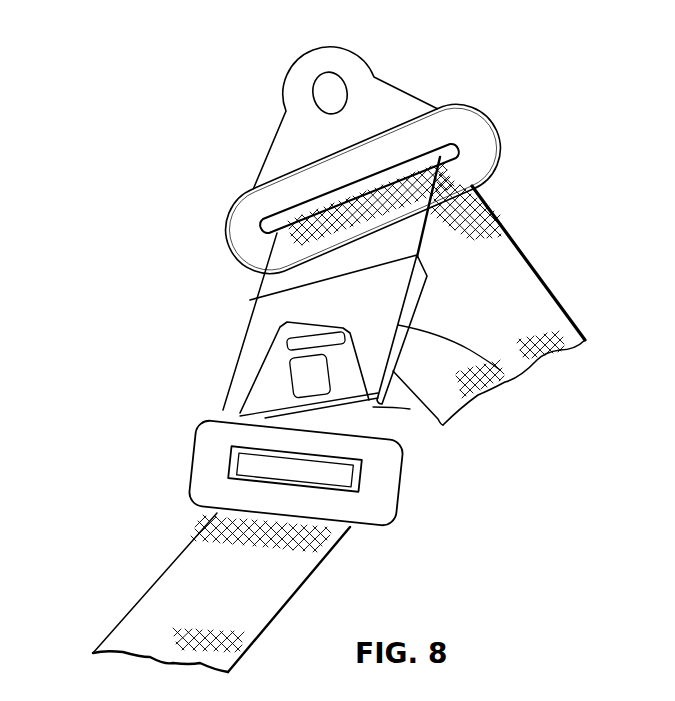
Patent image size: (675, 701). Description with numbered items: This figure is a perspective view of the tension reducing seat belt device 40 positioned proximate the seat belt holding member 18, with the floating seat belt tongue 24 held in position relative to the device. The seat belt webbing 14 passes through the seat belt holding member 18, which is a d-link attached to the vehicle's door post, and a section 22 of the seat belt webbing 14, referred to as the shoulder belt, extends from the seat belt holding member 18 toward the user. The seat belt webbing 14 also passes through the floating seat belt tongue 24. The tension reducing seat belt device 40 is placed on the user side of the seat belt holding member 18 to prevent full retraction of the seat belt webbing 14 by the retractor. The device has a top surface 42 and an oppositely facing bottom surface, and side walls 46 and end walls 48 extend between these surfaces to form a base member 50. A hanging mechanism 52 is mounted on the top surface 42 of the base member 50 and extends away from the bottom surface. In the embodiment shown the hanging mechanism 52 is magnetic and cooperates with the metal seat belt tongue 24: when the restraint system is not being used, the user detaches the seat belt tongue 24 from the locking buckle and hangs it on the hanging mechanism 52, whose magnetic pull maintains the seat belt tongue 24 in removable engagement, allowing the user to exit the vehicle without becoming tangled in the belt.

The seat belt webbing 14 is at (527, 251).
The seat belt holding member 18 is at (403, 93).
The section of the seat belt webbing 22 is at (148, 617).
The floating seat belt tongue 24 is at (318, 419).
The tension reducing seat belt device 40 is at (295, 280).
The top surface 42 is at (387, 318).
The side walls 46 is at (410, 409).
The end walls 48 is at (499, 369).
The base member 50 is at (232, 356).
The hanging mechanism 52 is at (287, 322).